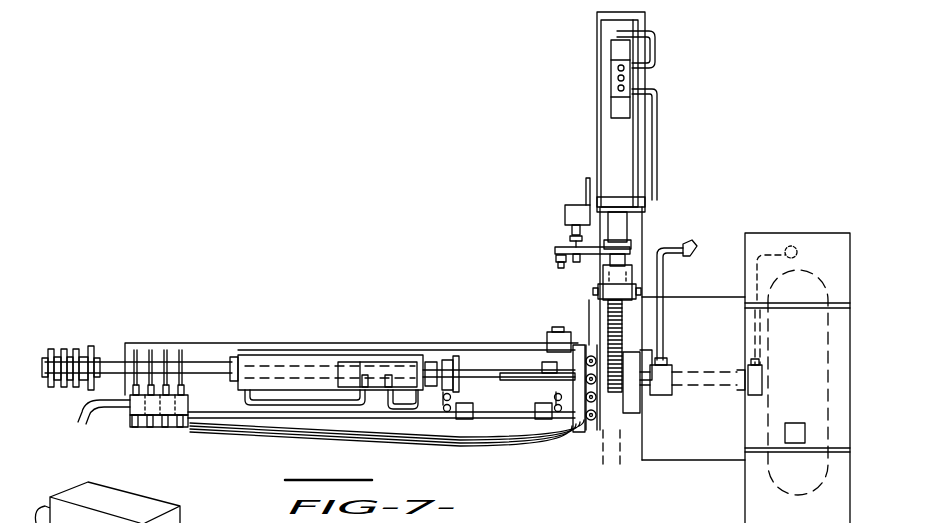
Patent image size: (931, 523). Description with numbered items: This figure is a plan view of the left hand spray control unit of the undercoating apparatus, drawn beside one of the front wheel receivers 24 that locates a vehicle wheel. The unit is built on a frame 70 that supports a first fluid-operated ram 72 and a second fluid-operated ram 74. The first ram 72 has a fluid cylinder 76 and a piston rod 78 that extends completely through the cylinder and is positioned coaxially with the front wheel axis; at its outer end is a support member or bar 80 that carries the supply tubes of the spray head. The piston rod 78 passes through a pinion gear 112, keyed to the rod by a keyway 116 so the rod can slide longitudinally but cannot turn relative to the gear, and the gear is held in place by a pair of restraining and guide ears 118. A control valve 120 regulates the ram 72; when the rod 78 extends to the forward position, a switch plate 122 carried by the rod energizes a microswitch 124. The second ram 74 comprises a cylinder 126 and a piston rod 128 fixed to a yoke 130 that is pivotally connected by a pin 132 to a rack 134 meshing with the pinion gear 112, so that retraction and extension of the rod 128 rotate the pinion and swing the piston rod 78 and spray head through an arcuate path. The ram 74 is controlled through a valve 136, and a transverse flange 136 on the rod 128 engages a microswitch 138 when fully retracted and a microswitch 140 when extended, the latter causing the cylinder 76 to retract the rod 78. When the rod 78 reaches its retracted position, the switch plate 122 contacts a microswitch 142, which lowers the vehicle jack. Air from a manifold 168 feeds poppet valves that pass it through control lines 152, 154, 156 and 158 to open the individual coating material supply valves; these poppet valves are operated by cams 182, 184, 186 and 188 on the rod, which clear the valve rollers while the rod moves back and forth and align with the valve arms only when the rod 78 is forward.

The front wheel receiver 24 is at (810, 215).
The frame 70 is at (597, 165).
The first fluid-operated ram 72 is at (322, 356).
The second fluid-operated ram 74 is at (572, 152).
The fluid cylinder 76 is at (272, 356).
The piston rod 78 is at (228, 345).
The support member or bar 80 is at (672, 392).
The pinion gear 112 is at (660, 348).
The keyway 116 is at (538, 384).
The restraining and guide ears 118 is at (623, 404).
The control valve 120 is at (395, 362).
The switch plate 122 is at (468, 346).
The microswitch 124 is at (540, 419).
The cylinder 126 is at (640, 130).
The piston rod 128 is at (627, 232).
The yoke 130 is at (632, 277).
The pin 132 is at (598, 290).
The rack 134 is at (608, 308).
The valve / transverse plate or flange 136 is at (610, 88).
The microswitch 138 is at (565, 214).
The microswitch 140 is at (550, 332).
The microswitch 142 is at (470, 419).
The control line 152 is at (135, 427).
The control line 154 is at (150, 427).
The control line 156 is at (165, 427).
The control line 158 is at (183, 427).
The manifold 168 is at (188, 406).
The cam 182 is at (58, 322).
The cam 184 is at (64, 349).
The cam 186 is at (76, 349).
The cam 188 is at (91, 346).